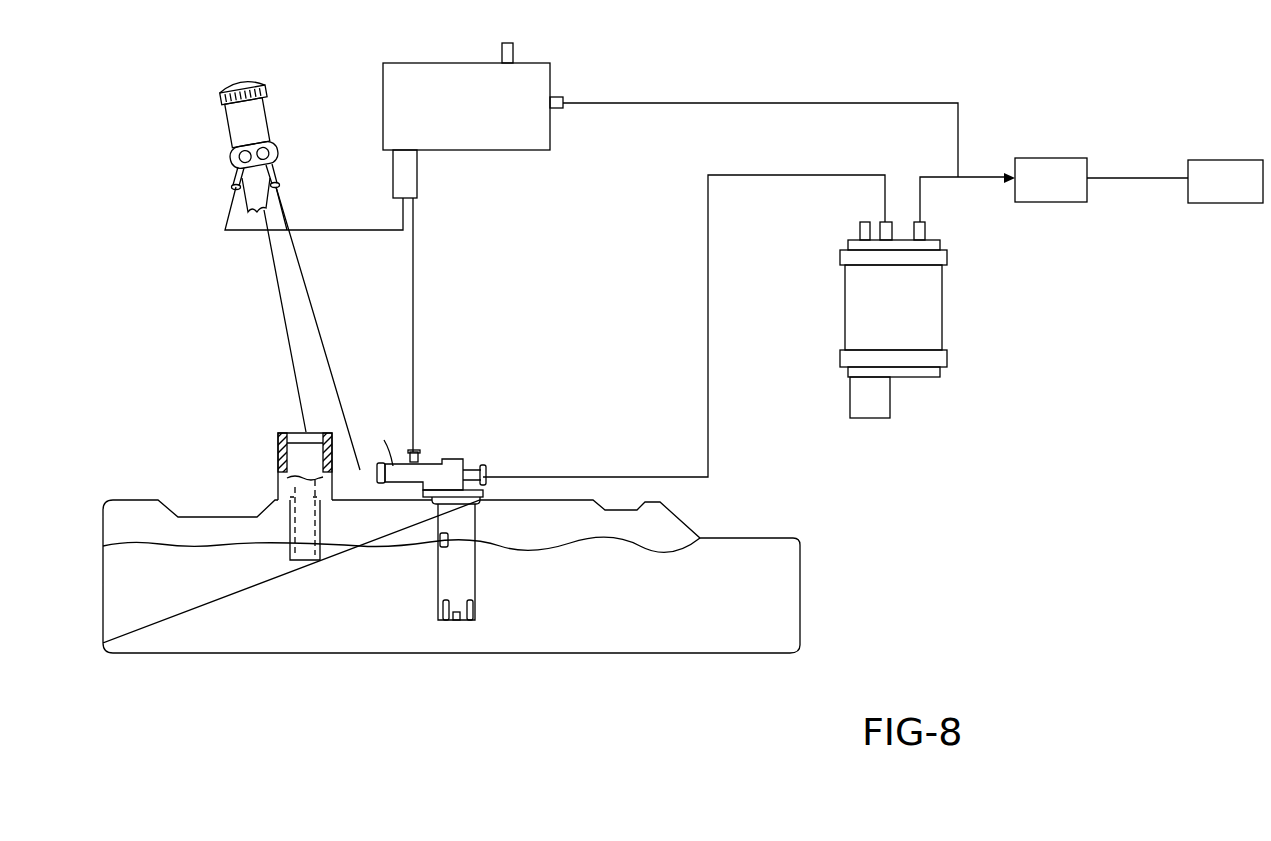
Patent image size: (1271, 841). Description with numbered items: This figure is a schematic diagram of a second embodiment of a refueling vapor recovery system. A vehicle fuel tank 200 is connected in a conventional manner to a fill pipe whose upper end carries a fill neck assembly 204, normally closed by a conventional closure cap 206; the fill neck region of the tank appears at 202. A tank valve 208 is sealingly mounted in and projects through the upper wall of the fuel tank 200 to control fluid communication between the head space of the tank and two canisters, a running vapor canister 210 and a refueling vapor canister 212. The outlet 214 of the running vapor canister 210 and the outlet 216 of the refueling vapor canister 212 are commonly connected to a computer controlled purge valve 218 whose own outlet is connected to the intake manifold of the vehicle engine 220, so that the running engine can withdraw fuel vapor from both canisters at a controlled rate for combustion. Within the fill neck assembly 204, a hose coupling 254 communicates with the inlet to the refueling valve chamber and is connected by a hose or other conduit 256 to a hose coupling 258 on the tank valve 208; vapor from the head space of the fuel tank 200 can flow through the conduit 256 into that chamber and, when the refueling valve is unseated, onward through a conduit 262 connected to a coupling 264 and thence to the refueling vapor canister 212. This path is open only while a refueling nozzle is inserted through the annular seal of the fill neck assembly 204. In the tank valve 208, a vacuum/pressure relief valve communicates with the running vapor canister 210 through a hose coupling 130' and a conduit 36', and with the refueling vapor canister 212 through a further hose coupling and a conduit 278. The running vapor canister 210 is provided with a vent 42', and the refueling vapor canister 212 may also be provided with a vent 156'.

The vehicle fuel tank 200 is at (800, 612).
The filler neck 202 is at (278, 458).
The fill neck assembly 204 is at (224, 134).
The closure cap 206 is at (240, 84).
The tank valve 208 is at (518, 418).
The running vapor canister 210 is at (938, 330).
The refueling vapor canister 212 is at (543, 91).
The outlet 214 is at (927, 232).
The outlet 216 is at (560, 110).
The computer controlled purge valve 218 is at (1108, 130).
The vehicle engine 220 is at (1184, 198).
The hose coupling 254 is at (282, 178).
The conduit 256 is at (324, 343).
The hose coupling 258 is at (381, 438).
The conduit 262 is at (340, 234).
The coupling 264 is at (235, 172).
The conduit 278 is at (414, 311).
The hose coupling 130' is at (494, 528).
The vent 156' is at (550, 50).
The conduit 36' is at (684, 326).
The vent 42' is at (832, 222).